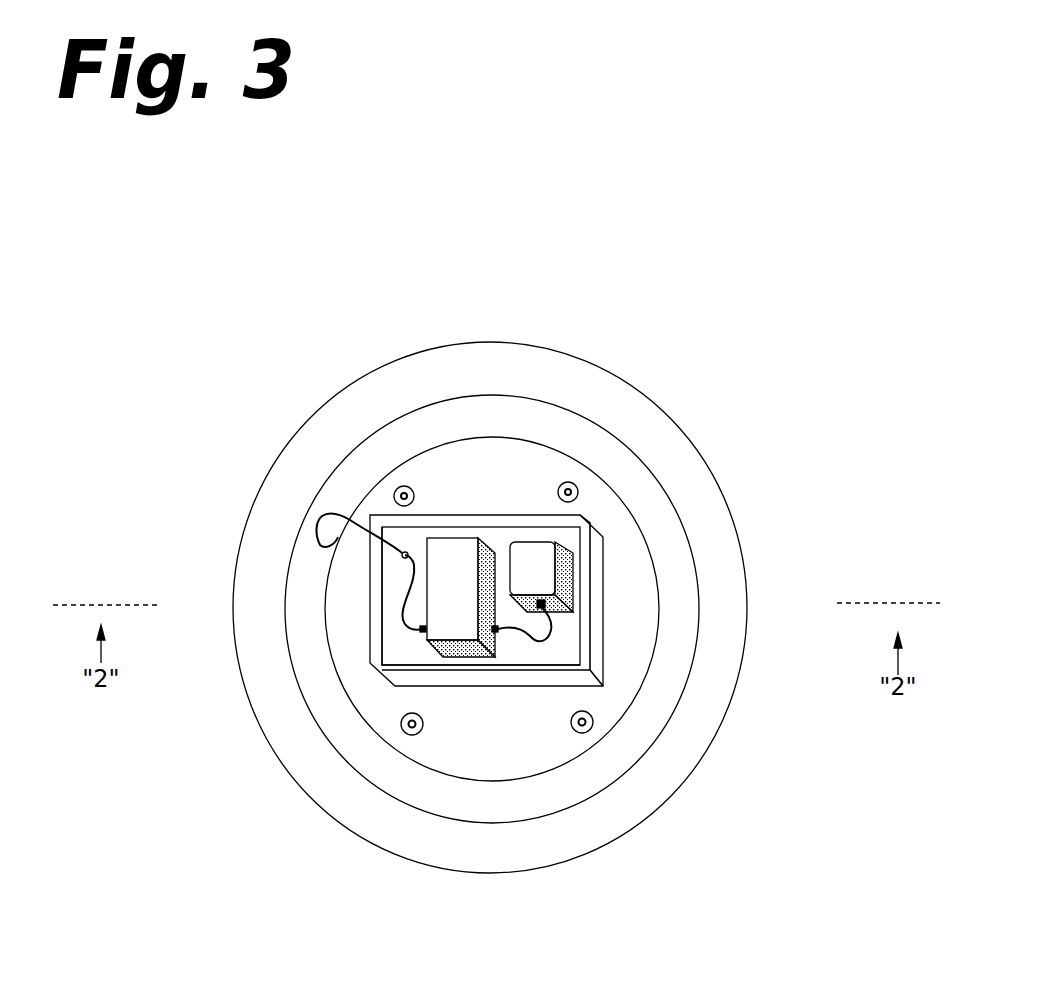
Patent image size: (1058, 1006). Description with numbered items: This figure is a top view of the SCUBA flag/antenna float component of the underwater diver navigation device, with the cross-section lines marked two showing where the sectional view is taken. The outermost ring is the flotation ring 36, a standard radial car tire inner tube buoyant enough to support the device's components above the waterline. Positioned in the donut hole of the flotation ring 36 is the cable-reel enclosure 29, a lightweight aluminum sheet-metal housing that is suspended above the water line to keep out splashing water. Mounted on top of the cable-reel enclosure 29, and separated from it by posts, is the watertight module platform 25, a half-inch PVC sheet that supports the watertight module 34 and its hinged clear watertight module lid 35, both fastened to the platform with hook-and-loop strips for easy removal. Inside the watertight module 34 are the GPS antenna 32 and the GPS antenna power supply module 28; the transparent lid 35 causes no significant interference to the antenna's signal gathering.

The watertight module platform 25 is at (530, 468).
The GPS antenna power supply module 28 is at (447, 560).
The cable-reel enclosure 29 is at (402, 438).
The GPS antenna 32 is at (545, 567).
The watertight module 34 is at (592, 627).
The clear watertight module lid 35 is at (375, 615).
The flotation ring 36 is at (546, 348).